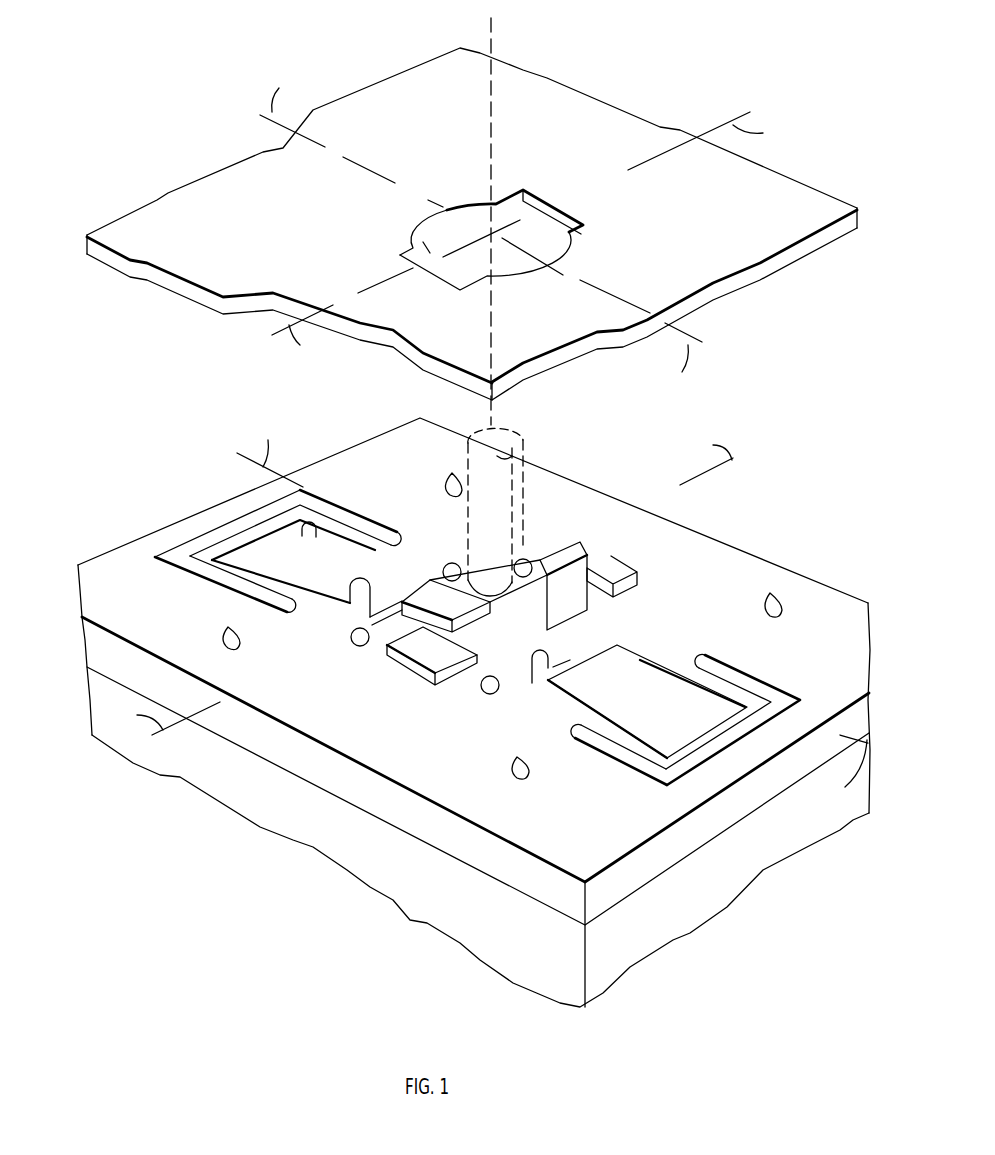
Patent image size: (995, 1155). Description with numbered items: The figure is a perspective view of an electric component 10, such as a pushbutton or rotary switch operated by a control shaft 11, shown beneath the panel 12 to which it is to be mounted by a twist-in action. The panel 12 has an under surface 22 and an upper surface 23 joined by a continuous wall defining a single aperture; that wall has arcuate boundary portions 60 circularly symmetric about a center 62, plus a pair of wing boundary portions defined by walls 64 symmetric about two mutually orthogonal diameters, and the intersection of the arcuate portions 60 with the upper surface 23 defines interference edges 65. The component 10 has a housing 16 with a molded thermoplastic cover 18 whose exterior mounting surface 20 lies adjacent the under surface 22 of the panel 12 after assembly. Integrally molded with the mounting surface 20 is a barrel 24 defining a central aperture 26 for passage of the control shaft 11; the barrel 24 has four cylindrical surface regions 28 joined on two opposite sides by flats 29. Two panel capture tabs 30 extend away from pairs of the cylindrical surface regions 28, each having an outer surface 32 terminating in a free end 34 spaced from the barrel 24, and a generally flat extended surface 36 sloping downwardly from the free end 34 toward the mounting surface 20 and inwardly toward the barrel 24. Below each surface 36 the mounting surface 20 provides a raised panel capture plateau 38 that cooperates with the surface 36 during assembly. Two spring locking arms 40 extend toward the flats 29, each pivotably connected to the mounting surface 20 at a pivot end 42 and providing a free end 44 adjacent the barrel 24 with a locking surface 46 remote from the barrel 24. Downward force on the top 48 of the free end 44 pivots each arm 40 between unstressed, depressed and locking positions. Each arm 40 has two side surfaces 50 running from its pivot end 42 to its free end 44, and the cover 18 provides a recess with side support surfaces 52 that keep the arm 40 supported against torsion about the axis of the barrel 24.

The electric component 10 is at (158, 805).
The control shaft 11 is at (542, 433).
The panel 12 is at (472, 217).
The housing 16 is at (447, 712).
The cover 18 is at (663, 855).
The mounting surface 20 is at (595, 840).
The under surface 22 is at (638, 335).
The upper surface 23 is at (784, 227).
The barrel 24 is at (508, 602).
The central aperture 26 is at (556, 540).
The cylindrical surface regions 28 is at (440, 571).
The flats 29 is at (545, 624).
The panel capture tabs 30 is at (425, 627).
The outer surface 32 is at (362, 598).
The free end 34 is at (400, 620).
The extended surface 36 is at (497, 633).
The panel capture plateau 38 is at (450, 665).
The spring locking arms 40 is at (642, 650).
The pivot end 42 is at (255, 560).
The free end 44 is at (457, 520).
The locking surface 46 is at (567, 654).
The top 48 is at (412, 553).
The side surfaces 50 is at (323, 598).
The side support surfaces 52 is at (317, 532).
The arcuate boundary portions 60 is at (501, 188).
The center 62 is at (577, 123).
The walls 64 is at (410, 247).
The interference edges 65 is at (428, 212).